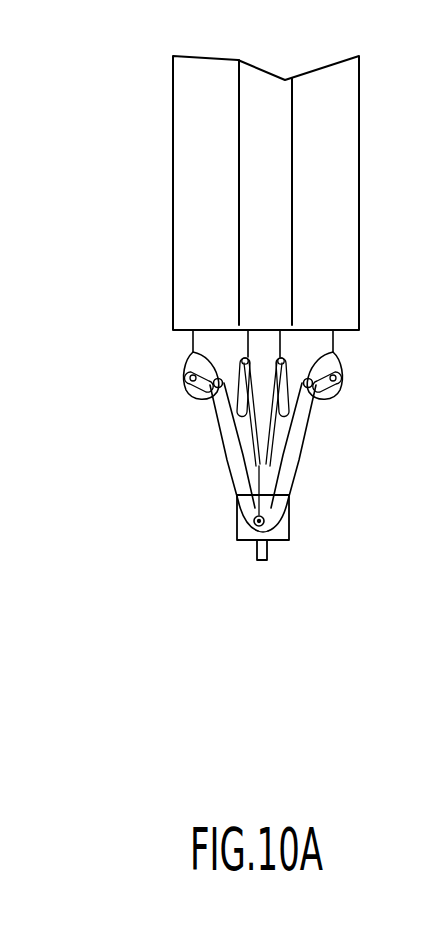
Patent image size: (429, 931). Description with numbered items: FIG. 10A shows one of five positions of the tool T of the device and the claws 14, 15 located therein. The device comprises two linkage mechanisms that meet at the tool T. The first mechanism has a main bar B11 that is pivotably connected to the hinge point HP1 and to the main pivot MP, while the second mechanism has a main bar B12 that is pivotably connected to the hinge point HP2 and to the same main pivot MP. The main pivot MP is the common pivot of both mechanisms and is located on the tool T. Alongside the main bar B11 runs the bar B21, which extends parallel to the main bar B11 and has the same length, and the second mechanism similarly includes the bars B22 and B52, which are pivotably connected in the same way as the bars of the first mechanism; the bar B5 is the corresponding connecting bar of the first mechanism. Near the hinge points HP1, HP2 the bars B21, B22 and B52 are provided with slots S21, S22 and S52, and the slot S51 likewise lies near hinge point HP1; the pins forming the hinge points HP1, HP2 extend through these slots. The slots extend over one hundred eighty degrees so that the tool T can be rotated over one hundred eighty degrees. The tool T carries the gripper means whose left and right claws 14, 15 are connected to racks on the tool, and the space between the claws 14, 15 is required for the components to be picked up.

The hinge point HP1 is at (217, 379).
The hinge point HP2 is at (309, 379).
The second bar B21 is at (193, 365).
The slot S21 is at (197, 386).
The slot S51 is at (240, 416).
The first connecting rod B5 is at (250, 436).
The main bar B11 is at (236, 468).
The bar B22 is at (331, 366).
The slot S22 is at (322, 383).
The slot S52 is at (285, 410).
The bar B52 is at (272, 434).
The main bar B12 is at (283, 450).
The tool T is at (237, 520).
The main pivot MP is at (264, 521).
The right claw 15 is at (257, 556).
The left claw 14 is at (266, 551).